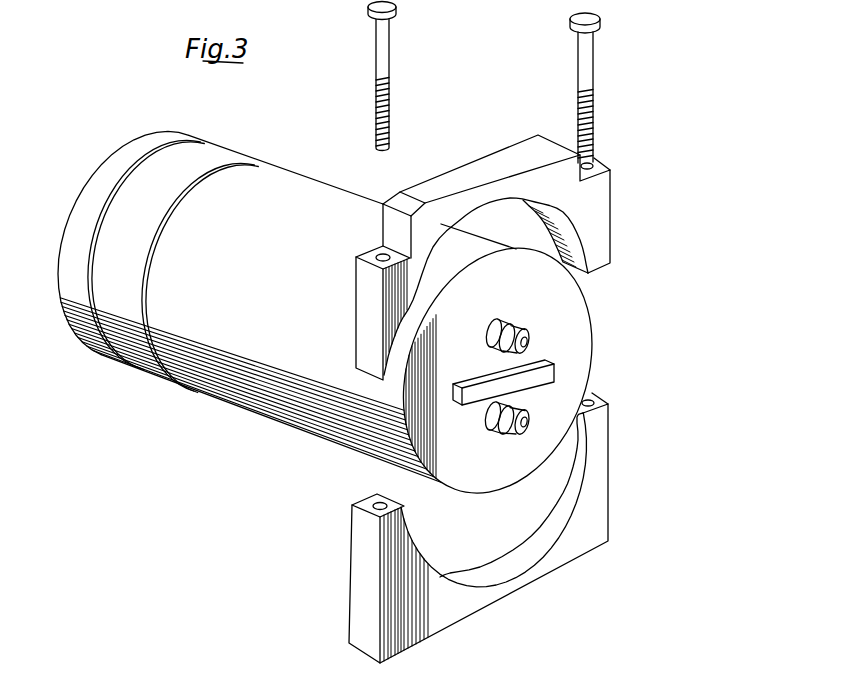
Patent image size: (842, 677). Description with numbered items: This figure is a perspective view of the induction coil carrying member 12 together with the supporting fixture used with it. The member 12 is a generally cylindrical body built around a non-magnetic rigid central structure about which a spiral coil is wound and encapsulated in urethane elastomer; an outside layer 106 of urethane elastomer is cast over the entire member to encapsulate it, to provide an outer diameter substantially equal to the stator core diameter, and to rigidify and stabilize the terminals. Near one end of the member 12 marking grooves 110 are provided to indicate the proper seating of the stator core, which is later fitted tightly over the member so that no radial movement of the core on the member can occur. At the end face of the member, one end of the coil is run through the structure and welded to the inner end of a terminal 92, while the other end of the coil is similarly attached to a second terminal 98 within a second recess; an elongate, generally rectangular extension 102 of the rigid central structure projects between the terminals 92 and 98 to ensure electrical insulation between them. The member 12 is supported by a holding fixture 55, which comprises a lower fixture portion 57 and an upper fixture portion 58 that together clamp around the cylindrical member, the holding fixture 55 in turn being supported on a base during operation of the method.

The induction coil carrying member 12 is at (212, 413).
The holding fixture 55 is at (349, 530).
The lower fixture portion 57 is at (467, 528).
The upper fixture portion 58 is at (590, 217).
The terminal 92 is at (528, 343).
The second terminal 98 is at (530, 422).
The extension 102 is at (540, 372).
The outside layer 106 is at (275, 190).
The marking grooves 110 is at (201, 131).